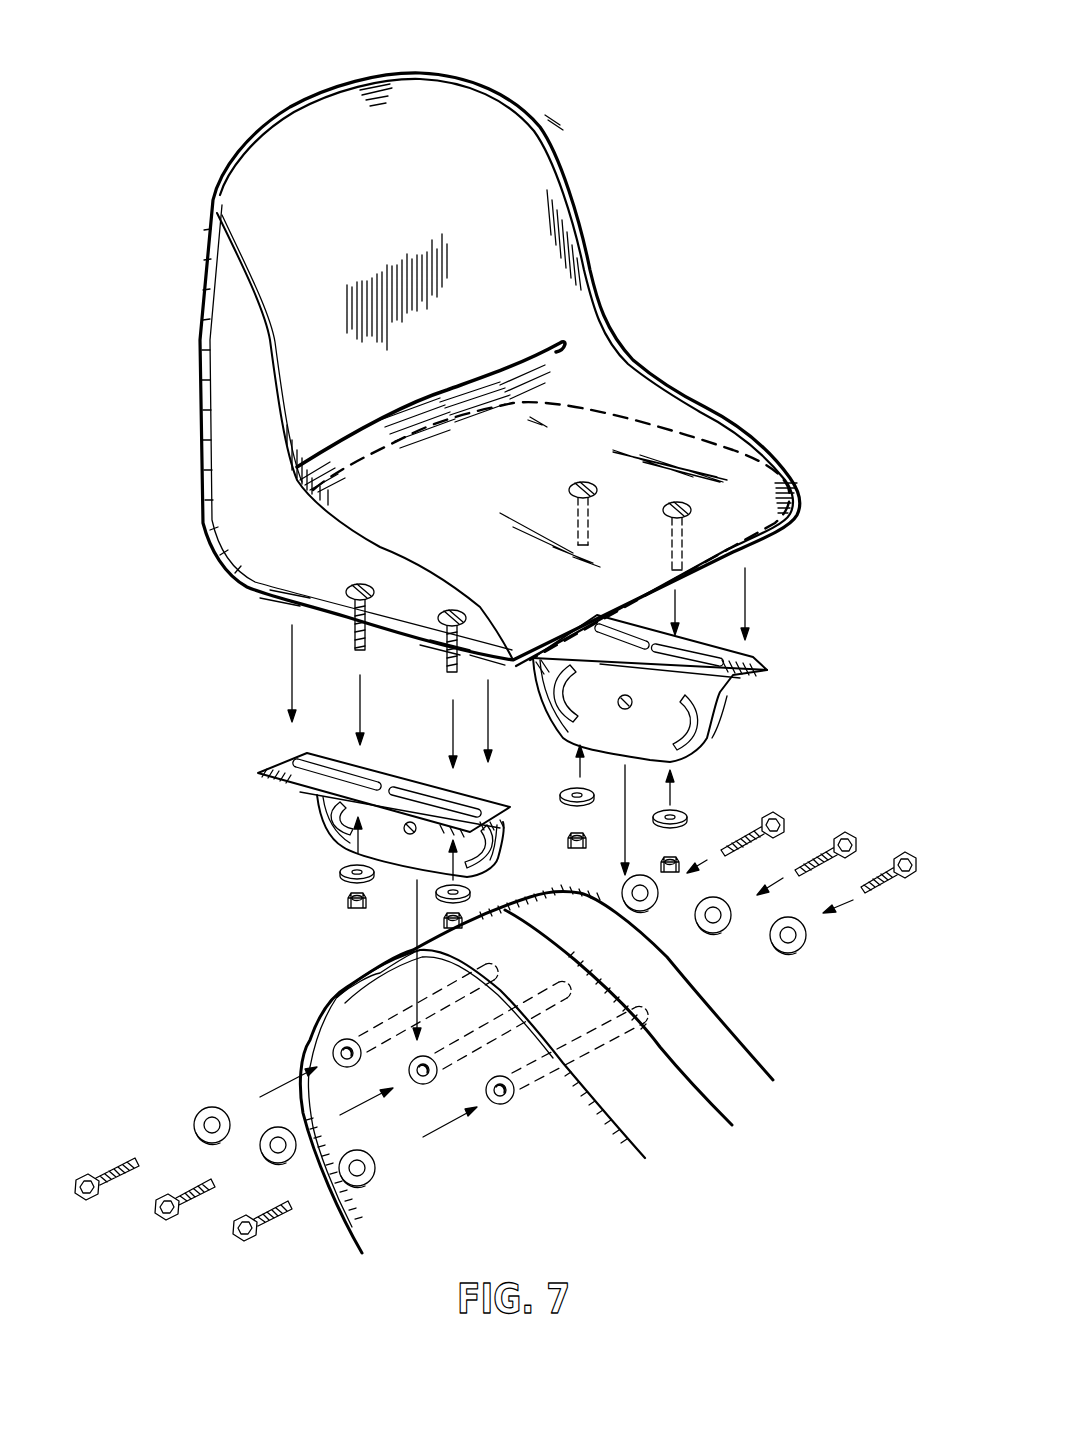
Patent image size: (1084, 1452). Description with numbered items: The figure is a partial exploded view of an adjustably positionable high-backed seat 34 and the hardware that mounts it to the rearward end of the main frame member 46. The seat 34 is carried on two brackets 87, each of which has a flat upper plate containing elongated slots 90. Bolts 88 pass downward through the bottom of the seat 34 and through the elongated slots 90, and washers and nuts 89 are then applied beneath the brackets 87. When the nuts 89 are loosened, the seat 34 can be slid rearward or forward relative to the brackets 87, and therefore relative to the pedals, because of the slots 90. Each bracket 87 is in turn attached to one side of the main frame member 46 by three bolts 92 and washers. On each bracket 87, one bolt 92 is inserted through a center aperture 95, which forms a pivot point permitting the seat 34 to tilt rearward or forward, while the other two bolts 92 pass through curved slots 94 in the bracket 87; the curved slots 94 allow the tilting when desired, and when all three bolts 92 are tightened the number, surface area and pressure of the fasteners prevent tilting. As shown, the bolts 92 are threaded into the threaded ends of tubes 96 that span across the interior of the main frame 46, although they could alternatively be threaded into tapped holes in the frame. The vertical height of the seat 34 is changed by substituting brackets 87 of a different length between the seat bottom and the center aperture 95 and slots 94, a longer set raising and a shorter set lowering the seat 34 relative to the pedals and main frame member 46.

The high-backed seat 34 is at (485, 125).
The main frame member 46 is at (697, 1030).
The bracket 87 is at (767, 666).
The bolt 88 is at (676, 505).
The nut 89 is at (345, 903).
The elongated slot 90 is at (735, 655).
The bolt 92 is at (907, 860).
The curved slot 94 is at (692, 718).
The center aperture 95 is at (620, 706).
The tube 96 is at (527, 1097).